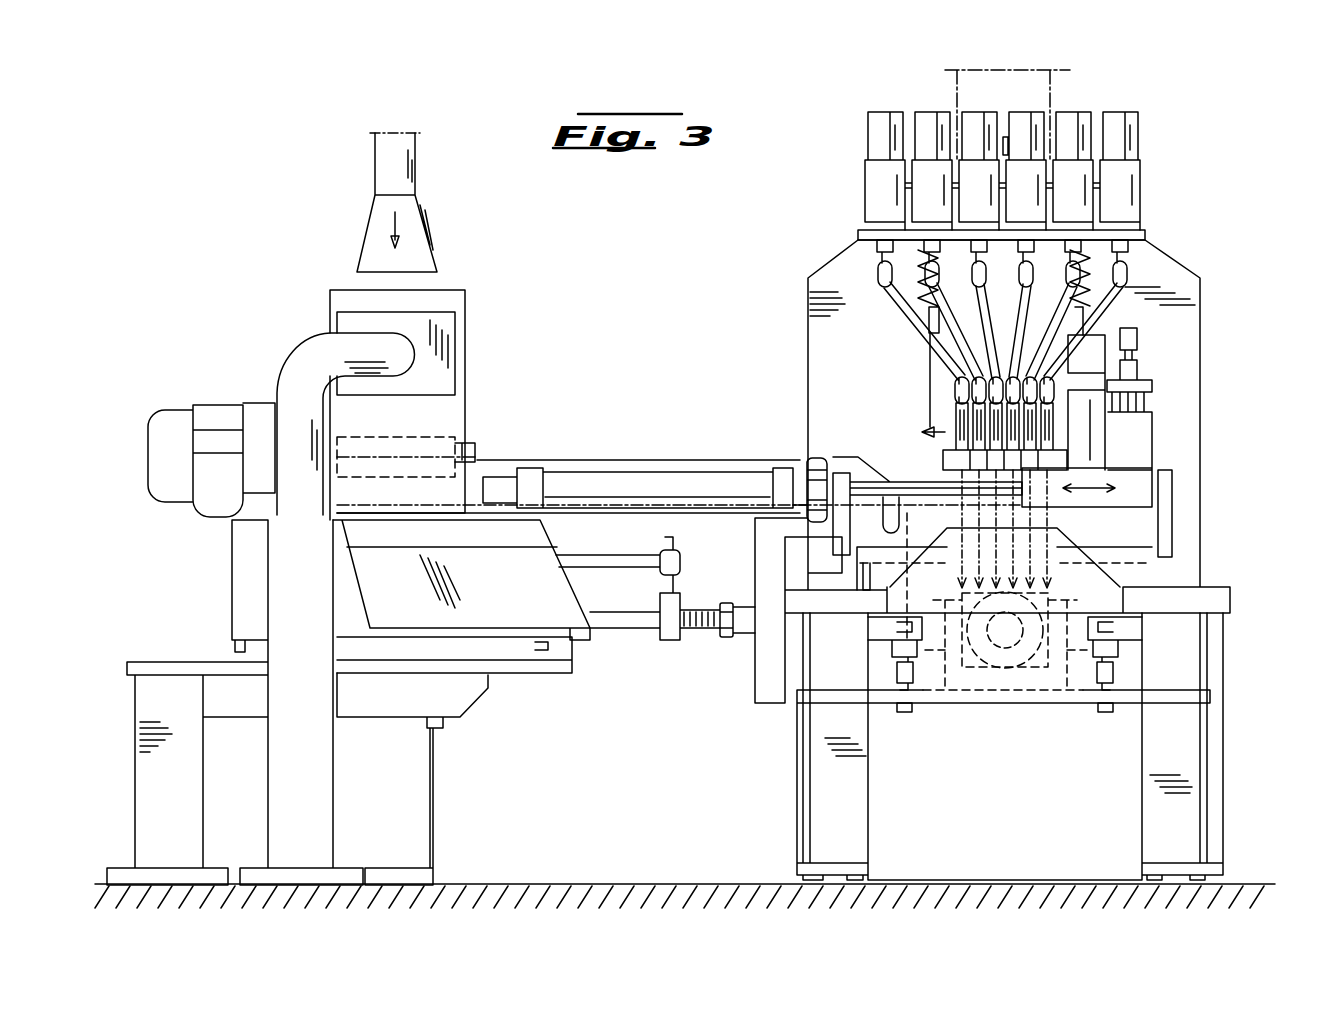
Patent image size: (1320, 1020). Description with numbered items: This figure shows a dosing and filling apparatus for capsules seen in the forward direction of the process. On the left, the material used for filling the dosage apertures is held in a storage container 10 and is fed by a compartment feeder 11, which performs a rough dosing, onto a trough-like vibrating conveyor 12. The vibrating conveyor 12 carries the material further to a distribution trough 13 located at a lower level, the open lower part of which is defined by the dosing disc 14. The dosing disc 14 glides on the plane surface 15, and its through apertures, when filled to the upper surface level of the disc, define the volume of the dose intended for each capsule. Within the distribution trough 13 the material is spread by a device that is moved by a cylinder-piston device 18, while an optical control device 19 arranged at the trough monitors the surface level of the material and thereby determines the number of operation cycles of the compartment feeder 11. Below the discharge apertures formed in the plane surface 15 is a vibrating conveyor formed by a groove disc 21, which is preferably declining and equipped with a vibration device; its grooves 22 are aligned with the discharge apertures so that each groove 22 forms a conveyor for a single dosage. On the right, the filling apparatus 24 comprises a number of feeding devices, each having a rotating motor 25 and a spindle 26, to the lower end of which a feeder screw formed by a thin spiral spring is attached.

The storage container 10 is at (455, 297).
The compartment feeder 11 is at (428, 433).
The vibrating conveyor 12 is at (595, 462).
The distribution trough 13 is at (892, 517).
The dosing disc 14 is at (947, 487).
The plane surface 15 is at (1067, 563).
The cylinder-piston device 18 is at (682, 478).
The optical control device 19 is at (1158, 445).
The groove disc 21 is at (953, 692).
The grooves 22 is at (953, 700).
The filling apparatus 24 is at (724, 282).
The rotating motor 25 is at (937, 122).
The spindle 26 is at (952, 345).